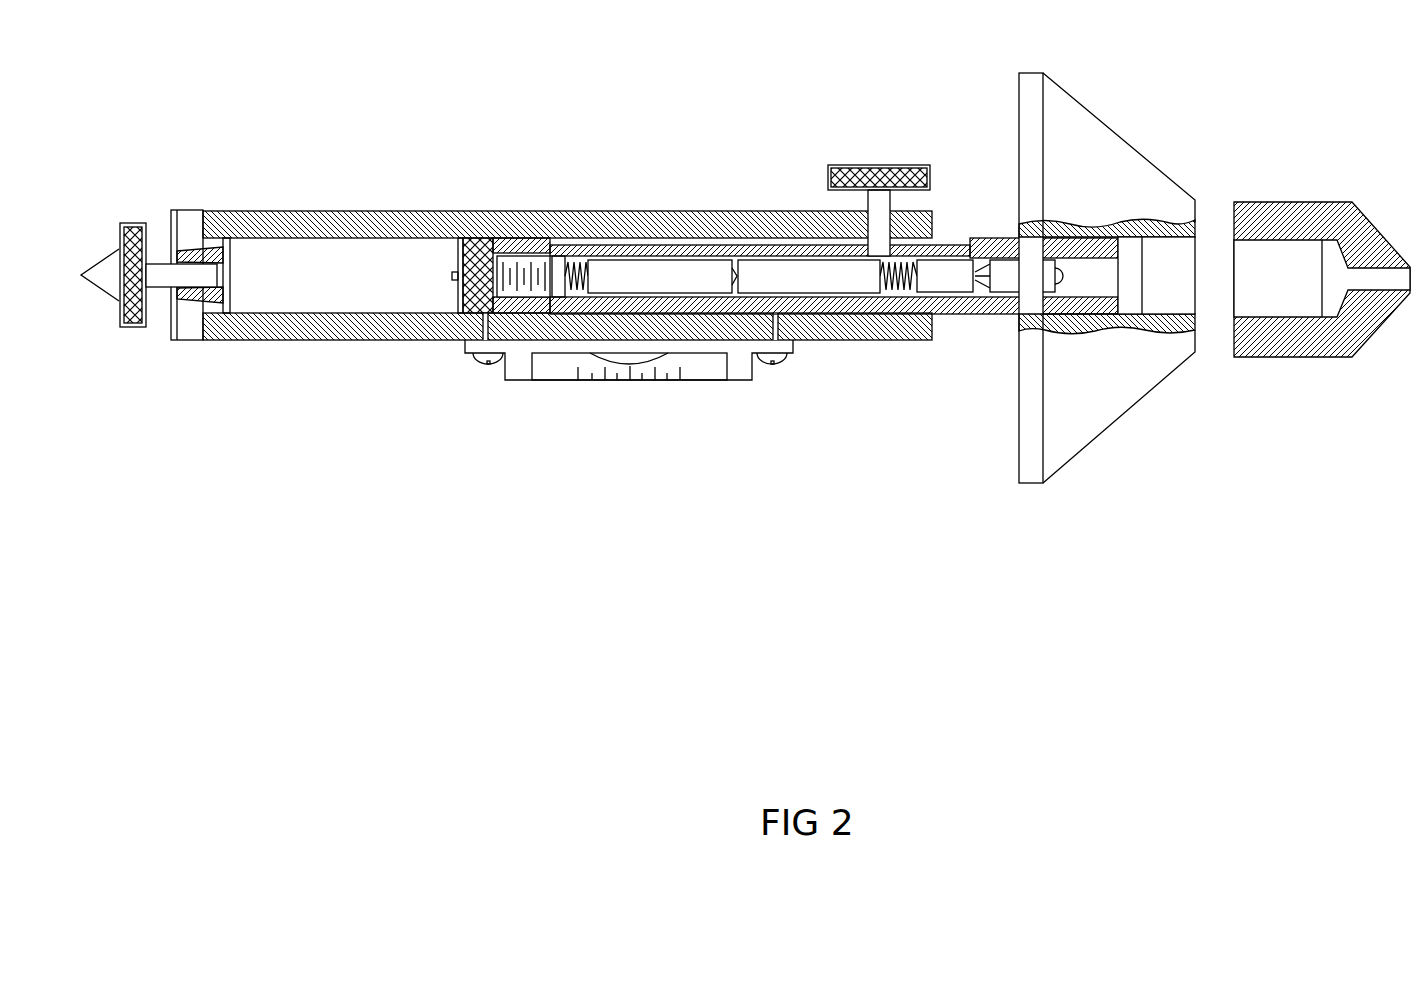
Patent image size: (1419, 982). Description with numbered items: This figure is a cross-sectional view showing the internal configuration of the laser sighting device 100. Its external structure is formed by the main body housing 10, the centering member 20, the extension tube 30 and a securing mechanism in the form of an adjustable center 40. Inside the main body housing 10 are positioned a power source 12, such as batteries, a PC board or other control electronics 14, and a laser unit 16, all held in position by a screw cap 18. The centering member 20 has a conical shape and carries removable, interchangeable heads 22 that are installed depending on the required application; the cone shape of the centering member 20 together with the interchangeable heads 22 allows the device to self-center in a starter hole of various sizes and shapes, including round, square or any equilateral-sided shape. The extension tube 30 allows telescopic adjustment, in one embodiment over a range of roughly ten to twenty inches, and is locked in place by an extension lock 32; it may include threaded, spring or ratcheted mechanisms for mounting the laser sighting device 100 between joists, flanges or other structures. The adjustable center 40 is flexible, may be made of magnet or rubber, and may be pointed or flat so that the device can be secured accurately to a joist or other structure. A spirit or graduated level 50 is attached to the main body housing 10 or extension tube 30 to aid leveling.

The laser sighting device 100 is at (1256, 116).
The main body housing 10 is at (980, 316).
The power source 12 is at (862, 283).
The control electronics 14 is at (955, 300).
The laser unit 16 is at (1005, 272).
The screw cap 18 is at (457, 300).
The centering member 20 is at (1080, 420).
The interchangeable heads 22 is at (1143, 397).
The extension tube 30 is at (412, 212).
The extension lock 32 is at (828, 165).
The adjustable center 40 is at (133, 330).
The graduated level 50 is at (519, 381).